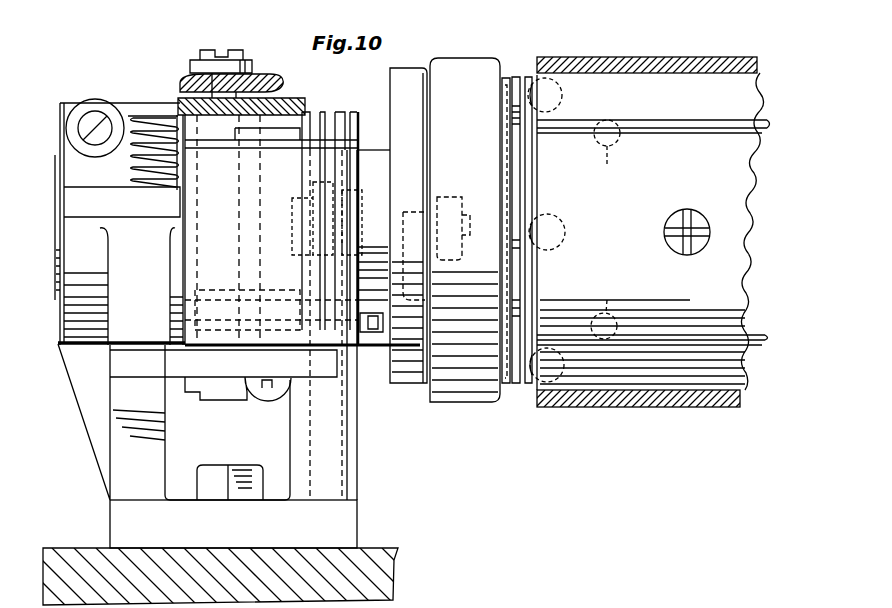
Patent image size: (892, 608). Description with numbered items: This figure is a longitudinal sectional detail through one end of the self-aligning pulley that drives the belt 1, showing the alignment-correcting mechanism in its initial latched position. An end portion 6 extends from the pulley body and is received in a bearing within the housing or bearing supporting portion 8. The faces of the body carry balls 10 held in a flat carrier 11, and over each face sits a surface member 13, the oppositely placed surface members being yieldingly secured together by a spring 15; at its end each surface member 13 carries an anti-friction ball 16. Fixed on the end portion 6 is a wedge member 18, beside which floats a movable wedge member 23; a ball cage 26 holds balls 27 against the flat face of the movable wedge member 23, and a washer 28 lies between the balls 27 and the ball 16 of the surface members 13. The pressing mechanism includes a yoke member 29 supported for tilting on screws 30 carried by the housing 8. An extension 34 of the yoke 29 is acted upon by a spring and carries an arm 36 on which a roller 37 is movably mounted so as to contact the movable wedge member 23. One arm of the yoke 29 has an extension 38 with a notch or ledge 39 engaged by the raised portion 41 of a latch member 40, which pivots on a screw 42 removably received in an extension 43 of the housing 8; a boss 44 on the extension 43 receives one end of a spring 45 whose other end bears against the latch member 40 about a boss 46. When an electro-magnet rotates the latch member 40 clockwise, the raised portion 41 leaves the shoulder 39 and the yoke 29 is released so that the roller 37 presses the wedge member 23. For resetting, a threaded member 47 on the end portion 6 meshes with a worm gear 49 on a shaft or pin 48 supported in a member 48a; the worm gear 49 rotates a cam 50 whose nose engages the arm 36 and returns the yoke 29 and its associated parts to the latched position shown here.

The belt 1 is at (675, 58).
The end portion 6 is at (55, 262).
The housing or bearing supporting portion 8 is at (66, 320).
The balls or anti-friction members 10 is at (610, 229).
The carrier 11 is at (759, 132).
The surface member 13 is at (745, 101).
The spring 15 is at (703, 234).
The ball 16 is at (532, 84).
The wedge member 18 is at (410, 78).
The movable wedge member 23 is at (478, 70).
The ball cage or carrier 26 is at (506, 78).
The balls or anti-friction members 27 is at (502, 125).
The washer 28 is at (518, 78).
The yoke member 29 is at (235, 262).
The screw 30 is at (230, 50).
The extension 34 is at (258, 289).
The arm 36 is at (376, 262).
The roller 37 is at (448, 197).
The extension 38 is at (258, 80).
The notch or ledge 39 is at (242, 70).
The latch member 40 is at (300, 102).
The raised portion 41 is at (212, 96).
The screw 42 is at (80, 128).
The extension 43 is at (72, 197).
The boss 44 is at (158, 192).
The spring 45 is at (138, 176).
The boss 46 is at (150, 122).
The threaded member 47 is at (338, 118).
The shaft or pin 48 is at (348, 410).
The member 48a is at (350, 458).
The worm gear 49 is at (295, 210).
The cam 50 is at (373, 333).